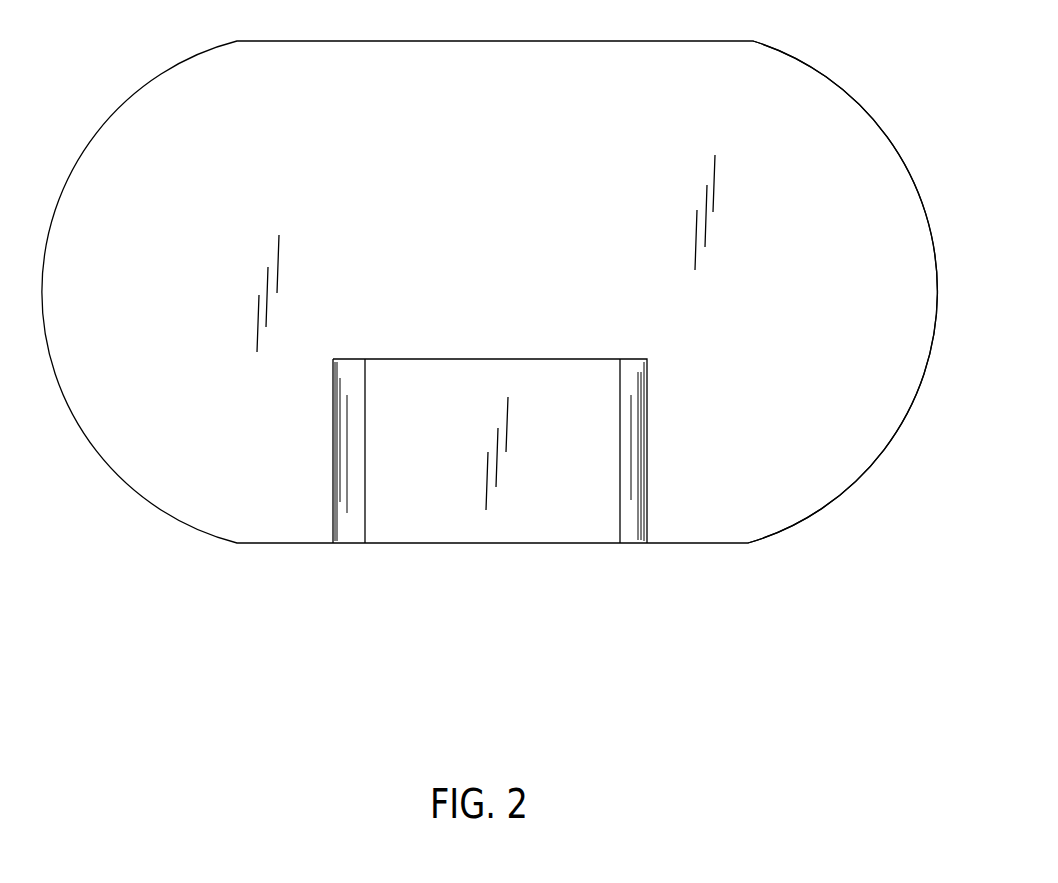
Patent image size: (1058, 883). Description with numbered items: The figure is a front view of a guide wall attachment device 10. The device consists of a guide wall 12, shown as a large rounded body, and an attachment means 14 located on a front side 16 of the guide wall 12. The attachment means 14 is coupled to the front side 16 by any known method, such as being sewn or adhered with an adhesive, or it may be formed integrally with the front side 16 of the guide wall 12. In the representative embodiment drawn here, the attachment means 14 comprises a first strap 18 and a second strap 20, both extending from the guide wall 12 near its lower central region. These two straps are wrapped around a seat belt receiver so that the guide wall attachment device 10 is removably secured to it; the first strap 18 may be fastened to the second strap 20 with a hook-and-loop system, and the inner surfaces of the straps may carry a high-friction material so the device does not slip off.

The guide wall attachment device 10 is at (140, 607).
The guide wall 12 is at (822, 153).
The attachment means 14 is at (385, 504).
The front side 16 is at (763, 470).
The first strap 18 is at (463, 513).
The second strap 20 is at (628, 504).